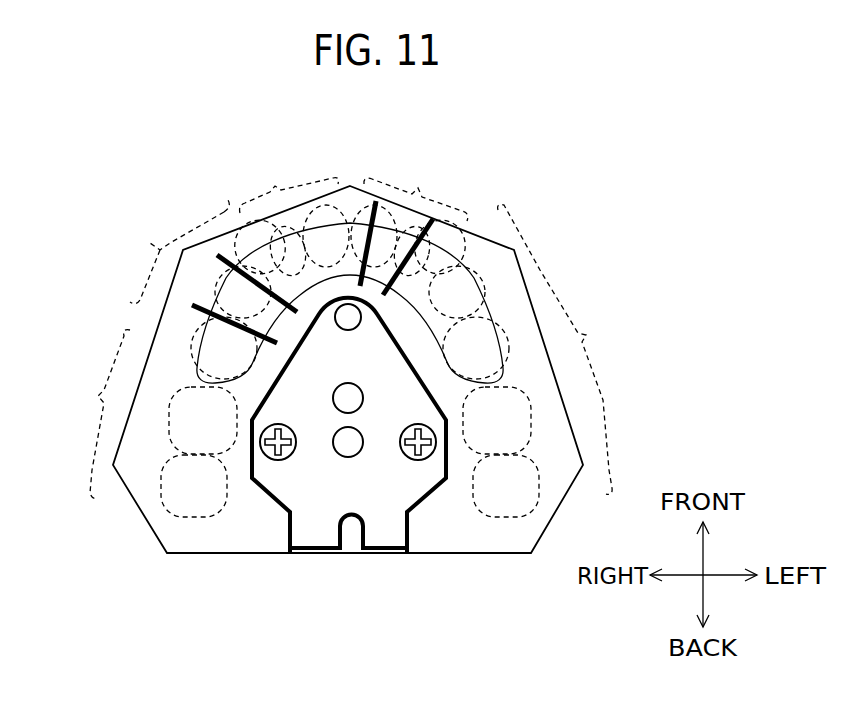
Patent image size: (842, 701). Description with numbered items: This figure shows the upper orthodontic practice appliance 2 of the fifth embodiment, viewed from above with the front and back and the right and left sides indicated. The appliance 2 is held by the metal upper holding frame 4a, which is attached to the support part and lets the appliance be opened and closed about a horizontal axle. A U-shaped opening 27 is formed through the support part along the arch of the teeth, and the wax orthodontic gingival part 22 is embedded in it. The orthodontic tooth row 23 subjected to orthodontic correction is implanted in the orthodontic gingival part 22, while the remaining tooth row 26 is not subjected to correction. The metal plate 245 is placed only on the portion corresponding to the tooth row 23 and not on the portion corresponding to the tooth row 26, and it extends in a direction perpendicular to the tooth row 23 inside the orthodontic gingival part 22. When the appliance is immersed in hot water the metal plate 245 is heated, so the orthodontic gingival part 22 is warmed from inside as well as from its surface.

The upper orthodontic practice appliance 2 is at (474, 150).
The metal plate 245 is at (364, 224).
The upper holding frame 4a is at (316, 528).
The opening 27 is at (257, 266).
The orthodontic gingival part 22 is at (447, 274).
The orthodontic tooth row 23 is at (297, 230).
The tooth row 26 is at (343, 337).